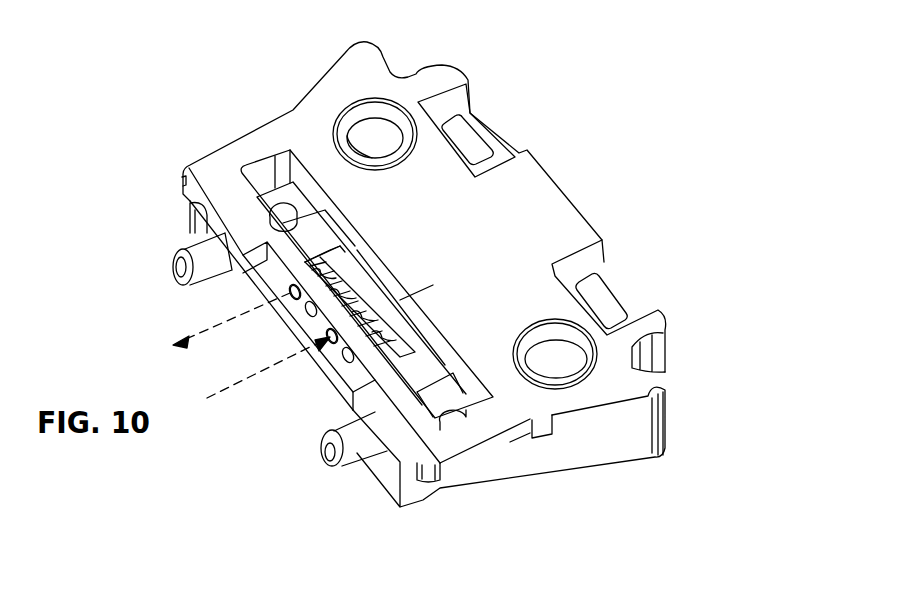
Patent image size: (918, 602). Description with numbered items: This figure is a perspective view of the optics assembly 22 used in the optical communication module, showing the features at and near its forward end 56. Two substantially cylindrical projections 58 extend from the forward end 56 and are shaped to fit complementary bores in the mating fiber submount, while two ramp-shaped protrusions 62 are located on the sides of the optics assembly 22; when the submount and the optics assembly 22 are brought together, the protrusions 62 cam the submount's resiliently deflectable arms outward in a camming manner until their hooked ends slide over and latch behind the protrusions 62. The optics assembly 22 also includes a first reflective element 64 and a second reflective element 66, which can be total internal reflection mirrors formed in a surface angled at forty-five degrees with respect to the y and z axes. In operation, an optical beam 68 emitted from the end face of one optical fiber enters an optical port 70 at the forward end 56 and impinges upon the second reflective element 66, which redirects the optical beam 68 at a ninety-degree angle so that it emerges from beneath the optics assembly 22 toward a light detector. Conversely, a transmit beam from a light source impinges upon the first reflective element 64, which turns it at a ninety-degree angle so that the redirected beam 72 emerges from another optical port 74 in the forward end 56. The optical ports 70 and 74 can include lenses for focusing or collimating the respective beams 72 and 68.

The optics assembly 22 is at (282, 69).
The forward end 56 is at (298, 367).
The cylindrical projections 58 is at (172, 254).
The ramp-shaped protrusions 62 is at (347, 56).
The first reflective element 64 is at (328, 268).
The second reflective element 66 is at (362, 322).
The optical beam 68 is at (224, 386).
The optical port 70 is at (337, 344).
The redirected beam 72 is at (237, 322).
The optical port 74 is at (293, 284).